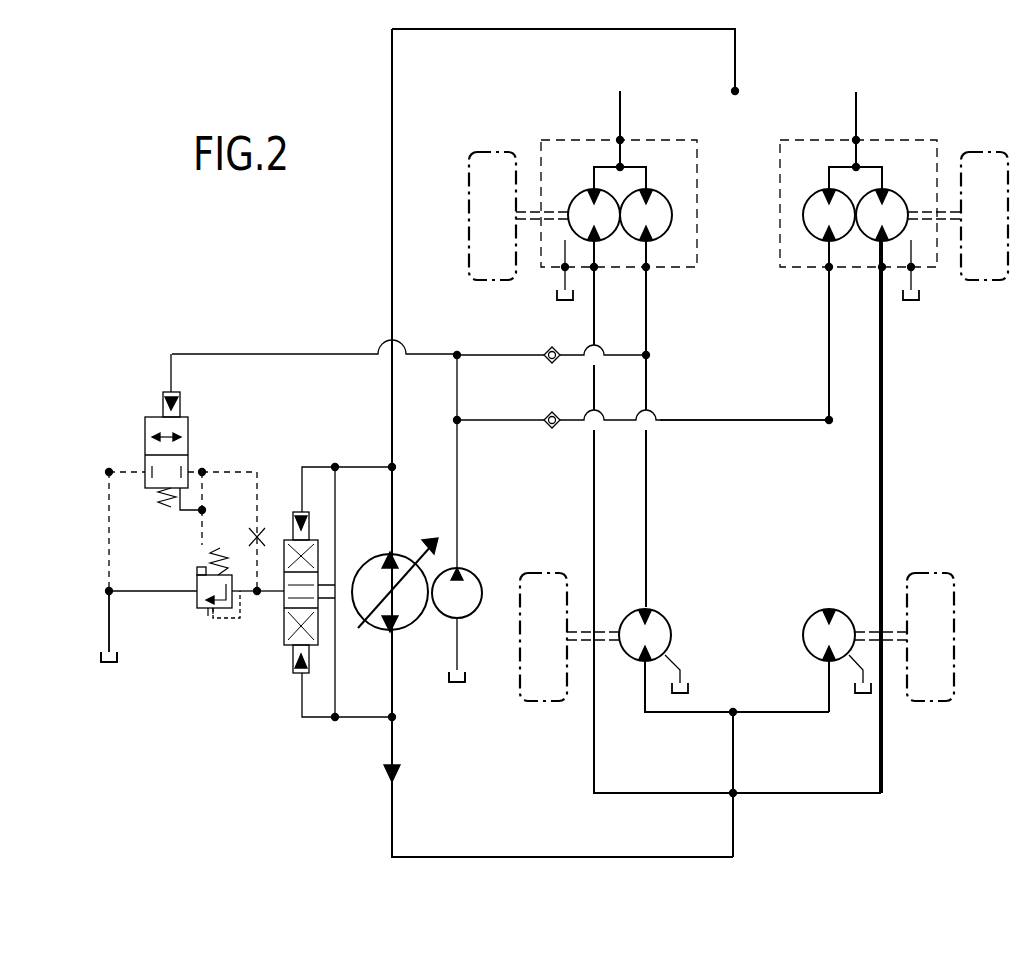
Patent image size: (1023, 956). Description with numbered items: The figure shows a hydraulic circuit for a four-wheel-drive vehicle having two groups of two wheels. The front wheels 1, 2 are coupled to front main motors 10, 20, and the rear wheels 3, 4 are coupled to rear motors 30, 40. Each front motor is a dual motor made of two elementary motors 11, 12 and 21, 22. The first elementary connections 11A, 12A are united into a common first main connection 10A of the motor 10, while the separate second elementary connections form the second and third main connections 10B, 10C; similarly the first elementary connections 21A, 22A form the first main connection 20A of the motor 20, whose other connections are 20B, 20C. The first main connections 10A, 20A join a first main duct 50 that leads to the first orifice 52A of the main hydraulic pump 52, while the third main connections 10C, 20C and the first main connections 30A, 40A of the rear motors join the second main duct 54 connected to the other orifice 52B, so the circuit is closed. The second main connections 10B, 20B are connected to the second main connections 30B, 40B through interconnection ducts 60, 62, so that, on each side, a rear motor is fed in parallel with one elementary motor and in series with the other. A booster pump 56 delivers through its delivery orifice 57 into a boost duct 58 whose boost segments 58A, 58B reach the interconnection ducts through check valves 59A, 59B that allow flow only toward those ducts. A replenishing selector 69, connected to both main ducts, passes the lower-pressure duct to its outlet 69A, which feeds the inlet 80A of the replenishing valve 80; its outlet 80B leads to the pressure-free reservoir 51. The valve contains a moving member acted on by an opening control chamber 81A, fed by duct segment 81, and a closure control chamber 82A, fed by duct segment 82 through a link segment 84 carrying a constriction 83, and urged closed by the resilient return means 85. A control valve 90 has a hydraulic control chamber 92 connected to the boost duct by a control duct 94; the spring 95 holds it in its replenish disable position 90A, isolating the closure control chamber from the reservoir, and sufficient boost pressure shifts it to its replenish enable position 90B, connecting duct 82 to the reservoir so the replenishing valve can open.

The wheel 1 is at (484, 164).
The wheel 2 is at (972, 170).
The wheel 3 is at (548, 694).
The wheel 4 is at (928, 576).
The front main motor 10 is at (556, 138).
The first main connection 10A is at (622, 148).
The second main connection 10B is at (650, 246).
The third main connection 10C is at (597, 248).
The elementary motor 11 is at (662, 208).
The first elementary connection 11A is at (648, 198).
The elementary motor 12 is at (586, 206).
The first elementary connection 12A is at (590, 182).
The front main motor 20 is at (880, 140).
The first main connection 20A is at (854, 158).
The second main connection 20B is at (826, 246).
The third main connection 20C is at (881, 246).
The elementary motor 21 is at (811, 224).
The first elementary connection 21A is at (826, 192).
The elementary motor 22 is at (904, 248).
The first elementary connection 22A is at (880, 196).
The rear motor 30 is at (660, 630).
The first main connection 30A is at (642, 668).
The second main connection 30B is at (650, 610).
The rear motor 40 is at (818, 624).
The first main connection 40A is at (825, 658).
The second main connection 40B is at (828, 610).
The first main duct 50 is at (392, 98).
The pressure-free reservoir 51 is at (116, 670).
The main hydraulic pump 52 is at (421, 620).
The first orifice 52A is at (385, 548).
The other orifice 52B is at (386, 632).
The second main duct 54 is at (496, 857).
The booster pump 56 is at (477, 600).
The delivery orifice 57 is at (459, 567).
The boost duct 58 is at (454, 527).
The boost segment 58A is at (472, 355).
The boost segment 58B is at (518, 418).
The check valve 59A is at (551, 350).
The check valve 59B is at (552, 424).
The interconnection duct 60 is at (648, 338).
The interconnection duct 62 is at (826, 364).
The replenishing selector 69 is at (310, 502).
The outlet 69A is at (284, 594).
The replenishing valve 80 is at (196, 584).
The inlet 80A is at (238, 598).
The outlet 80B is at (192, 596).
The duct segment 81 is at (228, 620).
The opening control chamber 81A is at (208, 622).
The duct segment 82 is at (200, 536).
The closure control chamber 82A is at (196, 572).
The constriction 83 is at (258, 534).
The link segment 84 is at (258, 468).
The replenishing resilient return means 85 is at (220, 552).
The control valve 90 is at (144, 418).
The replenish disable position 90A is at (150, 464).
The replenish enable position 90B is at (178, 452).
The hydraulic control chamber 92 is at (182, 400).
The control duct 94 is at (265, 354).
The spring 95 is at (164, 504).